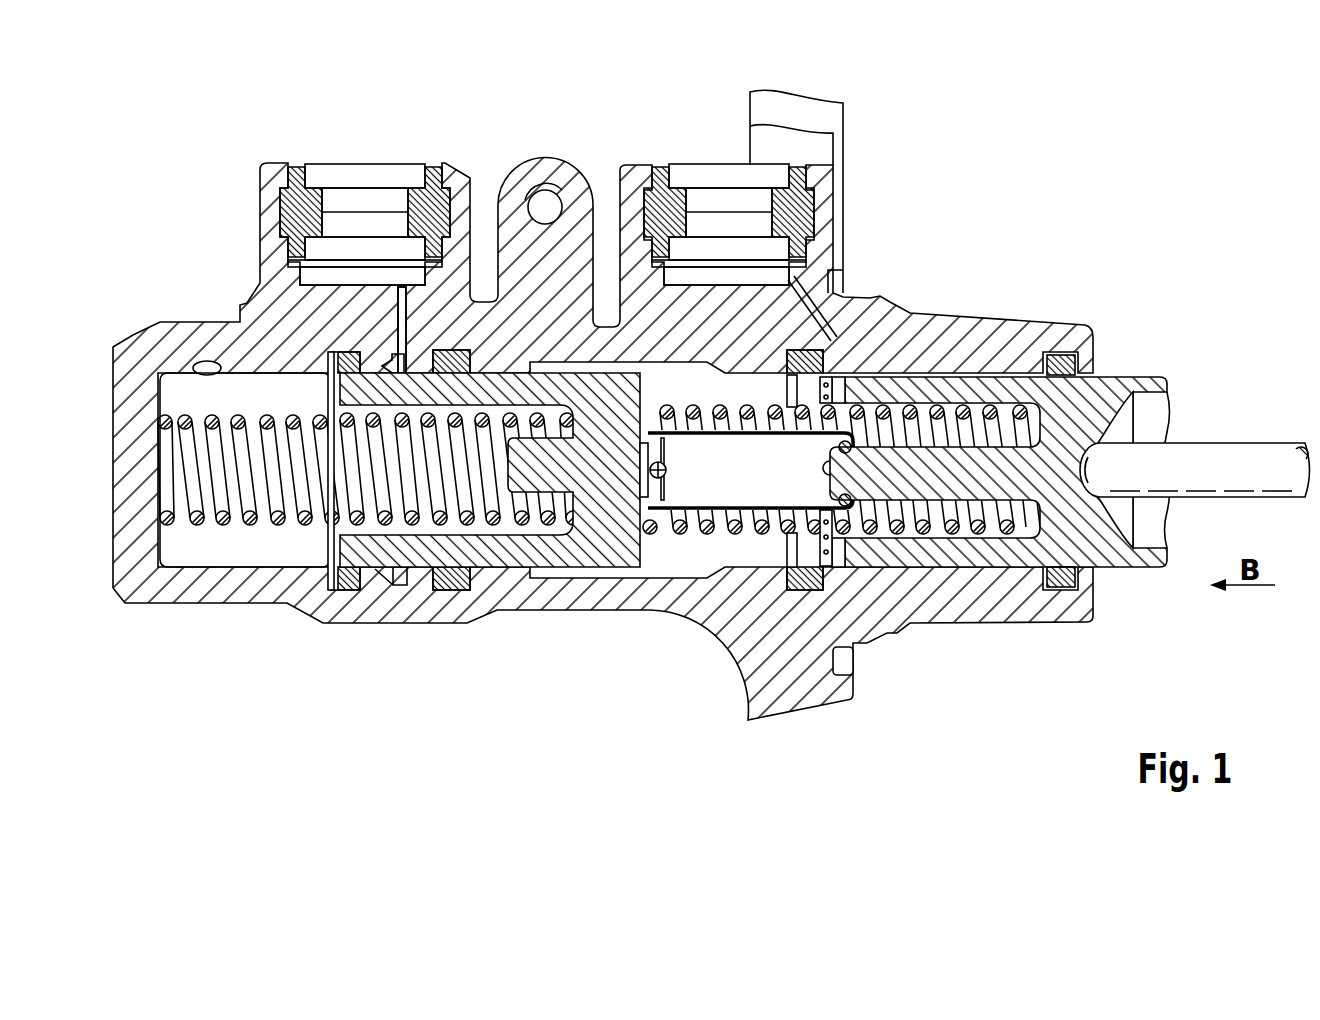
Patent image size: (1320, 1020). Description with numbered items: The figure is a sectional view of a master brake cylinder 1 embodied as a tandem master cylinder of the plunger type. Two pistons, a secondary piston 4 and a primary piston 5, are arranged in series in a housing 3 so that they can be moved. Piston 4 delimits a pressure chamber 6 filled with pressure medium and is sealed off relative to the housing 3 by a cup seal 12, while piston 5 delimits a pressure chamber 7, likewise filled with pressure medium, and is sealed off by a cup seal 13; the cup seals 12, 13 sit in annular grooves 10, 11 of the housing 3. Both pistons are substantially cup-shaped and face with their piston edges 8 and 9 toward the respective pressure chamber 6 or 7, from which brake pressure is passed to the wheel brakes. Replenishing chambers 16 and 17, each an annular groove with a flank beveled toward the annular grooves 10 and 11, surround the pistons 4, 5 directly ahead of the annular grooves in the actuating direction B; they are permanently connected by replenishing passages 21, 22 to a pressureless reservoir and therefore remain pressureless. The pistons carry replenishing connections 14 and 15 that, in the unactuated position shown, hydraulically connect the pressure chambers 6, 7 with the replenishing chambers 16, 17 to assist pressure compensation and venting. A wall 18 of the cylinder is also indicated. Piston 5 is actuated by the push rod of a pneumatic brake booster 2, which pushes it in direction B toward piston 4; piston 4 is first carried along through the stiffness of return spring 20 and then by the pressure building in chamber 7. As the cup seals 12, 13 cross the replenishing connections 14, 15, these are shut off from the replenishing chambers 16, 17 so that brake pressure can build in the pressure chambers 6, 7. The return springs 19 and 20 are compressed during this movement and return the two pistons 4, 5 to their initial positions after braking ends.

The master brake cylinder 1 is at (711, 416).
The pneumatic brake booster 2 is at (1245, 437).
The housing 3 is at (603, 405).
The secondary piston 4 is at (573, 567).
The primary piston 5 is at (1122, 572).
The pressure chamber 6 is at (225, 547).
The pressure chamber 7 is at (668, 562).
The piston edge 8 is at (326, 540).
The piston edge 9 is at (768, 568).
The annular groove 10 is at (336, 590).
The annular groove 11 is at (798, 596).
The cup seal 12 is at (373, 586).
The cup seal 13 is at (830, 592).
The replenishing connection 14 is at (330, 373).
The replenishing connection 15 is at (873, 373).
The replenishing chamber 16 is at (400, 360).
The replenishing chamber 17 is at (857, 350).
The wall 18 is at (917, 373).
The return spring 19 is at (282, 525).
The return spring 20 is at (950, 545).
The replenishing passage 21 is at (400, 322).
The replenishing passage 22 is at (832, 293).